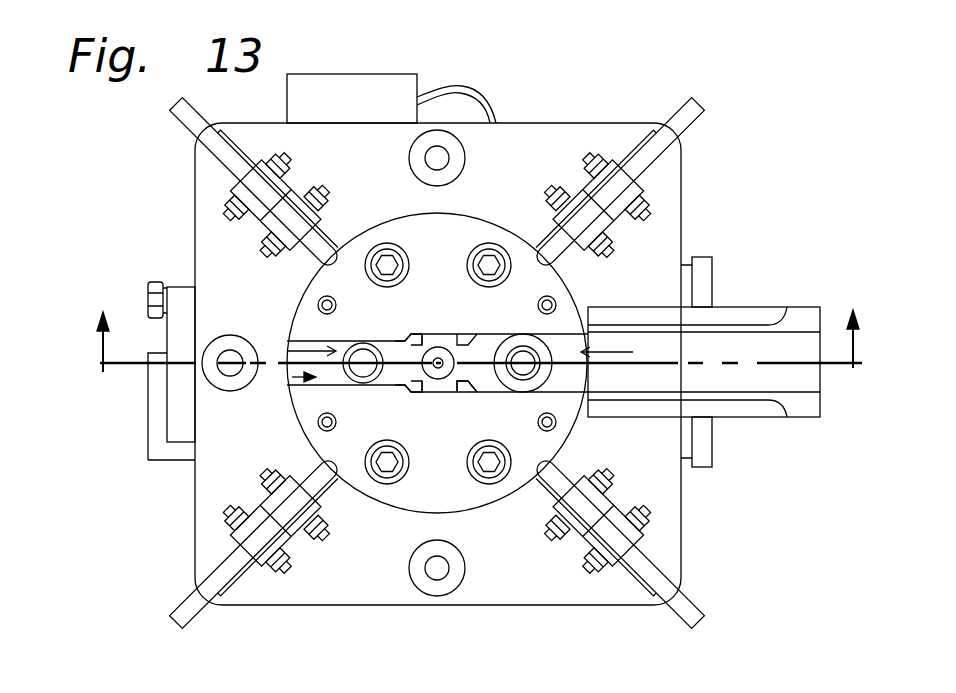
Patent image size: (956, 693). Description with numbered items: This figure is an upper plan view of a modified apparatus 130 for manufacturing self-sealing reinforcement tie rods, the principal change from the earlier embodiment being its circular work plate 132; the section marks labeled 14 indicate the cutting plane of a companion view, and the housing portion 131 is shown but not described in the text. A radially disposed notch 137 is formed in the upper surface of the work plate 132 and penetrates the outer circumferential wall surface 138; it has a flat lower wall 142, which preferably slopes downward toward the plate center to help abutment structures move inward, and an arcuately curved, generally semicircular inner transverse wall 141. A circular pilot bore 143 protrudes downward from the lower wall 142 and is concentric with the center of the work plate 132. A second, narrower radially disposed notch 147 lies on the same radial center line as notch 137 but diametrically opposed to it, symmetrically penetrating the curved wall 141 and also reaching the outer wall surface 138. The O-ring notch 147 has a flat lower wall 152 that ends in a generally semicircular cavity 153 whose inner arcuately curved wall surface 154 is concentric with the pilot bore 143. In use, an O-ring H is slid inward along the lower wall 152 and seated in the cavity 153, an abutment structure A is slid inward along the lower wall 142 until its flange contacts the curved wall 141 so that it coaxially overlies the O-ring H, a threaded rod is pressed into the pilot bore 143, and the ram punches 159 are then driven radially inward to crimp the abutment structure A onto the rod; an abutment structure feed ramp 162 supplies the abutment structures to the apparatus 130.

The modified apparatus 130 is at (630, 102).
The housing 131 is at (525, 123).
The circular work plate 132 is at (378, 208).
The outer circumferential wall surface 138 is at (493, 224).
The ram punches 159 is at (320, 270).
The second radially disposed notch 147 is at (292, 378).
The radially disposed notch 137 is at (485, 383).
The inner transverse wall 141 is at (432, 340).
The semicircular cavity 153 is at (448, 388).
The inner arcuately curved wall surface 154 is at (463, 384).
The circular pilot bore 143 is at (440, 348).
The flat lower wall 152 is at (334, 380).
The flat lower wall 142 is at (560, 387).
The abutment structure feed ramp 162 is at (774, 292).
The abutment structure A is at (543, 350).
The O-ring H is at (336, 341).
The section line 14- 14 is at (481, 330).